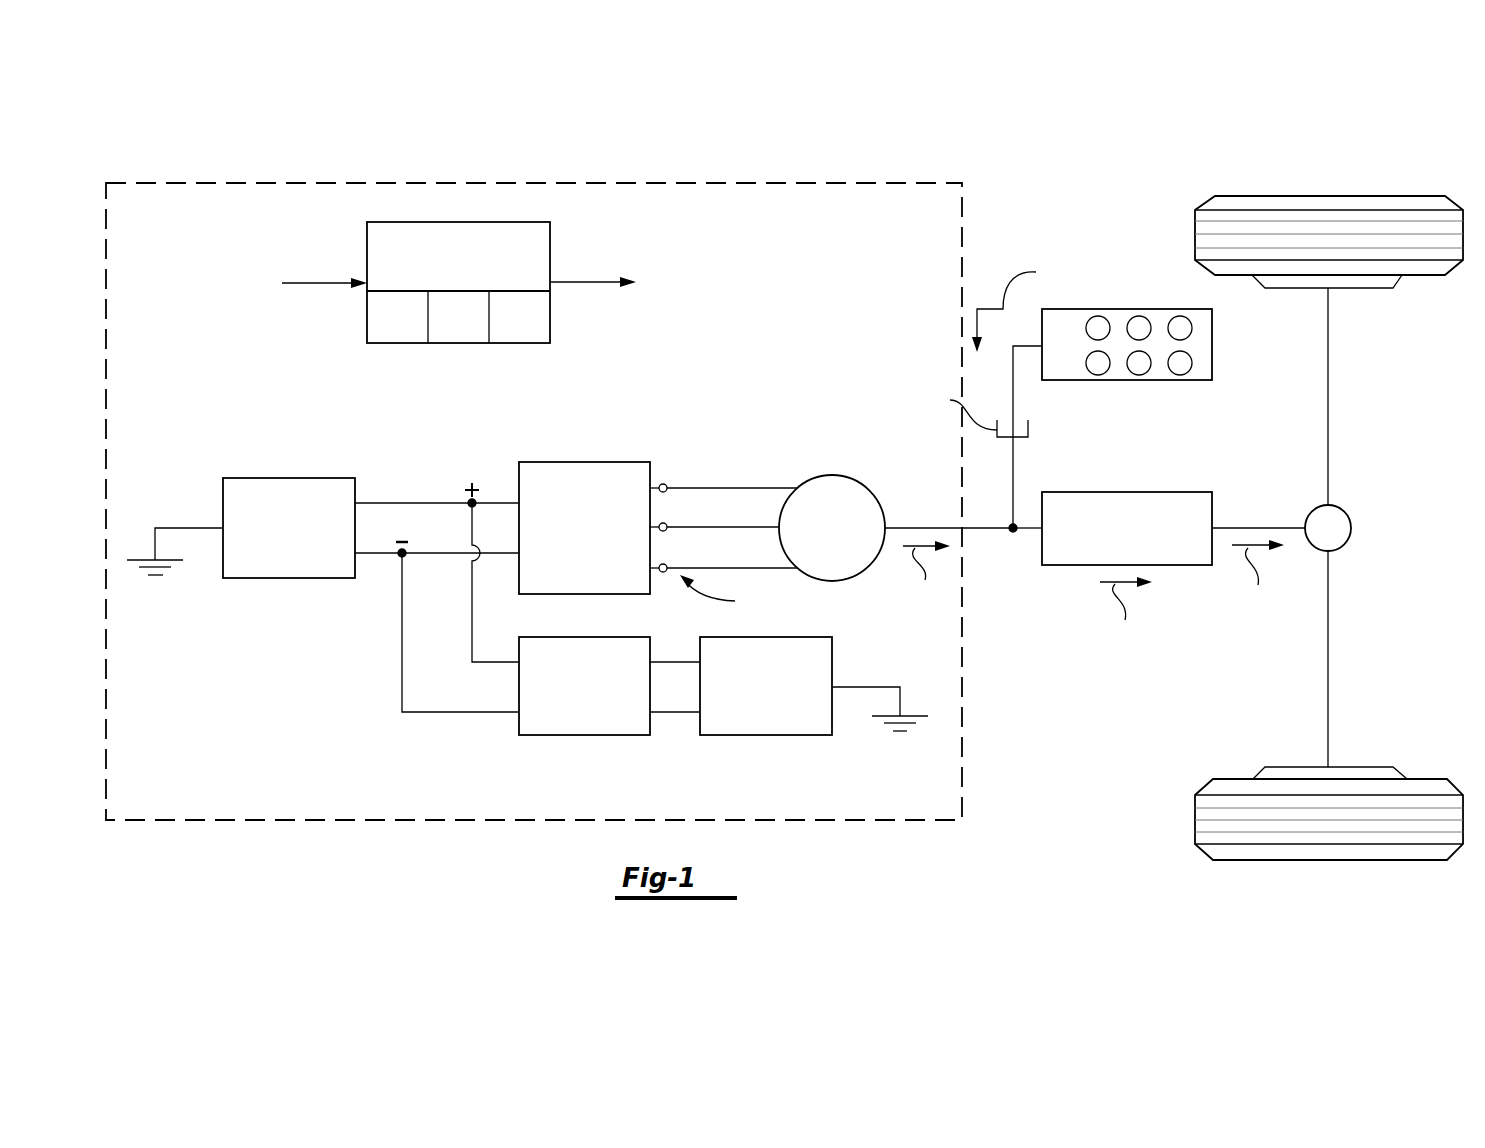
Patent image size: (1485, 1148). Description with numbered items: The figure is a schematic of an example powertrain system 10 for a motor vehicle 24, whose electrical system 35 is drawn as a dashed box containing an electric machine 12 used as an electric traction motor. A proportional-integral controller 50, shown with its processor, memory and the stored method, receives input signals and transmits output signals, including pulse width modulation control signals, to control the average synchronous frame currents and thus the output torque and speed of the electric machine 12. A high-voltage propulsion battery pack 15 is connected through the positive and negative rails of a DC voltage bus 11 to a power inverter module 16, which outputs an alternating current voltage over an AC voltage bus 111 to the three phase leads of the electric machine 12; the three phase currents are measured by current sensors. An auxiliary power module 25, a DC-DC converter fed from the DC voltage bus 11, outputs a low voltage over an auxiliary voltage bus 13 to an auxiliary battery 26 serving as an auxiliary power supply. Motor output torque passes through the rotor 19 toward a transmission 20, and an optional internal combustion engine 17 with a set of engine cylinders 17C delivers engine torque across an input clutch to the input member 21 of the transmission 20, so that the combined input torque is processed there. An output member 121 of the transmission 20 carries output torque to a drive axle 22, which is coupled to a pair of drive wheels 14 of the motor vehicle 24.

The powertrain system 10 is at (772, 256).
The electrical system 35 is at (537, 183).
The controller 50 is at (367, 244).
The propulsion battery pack 15 is at (288, 478).
The high-voltage DC voltage bus 11 is at (406, 503).
The power inverter module 16 is at (585, 462).
The high-voltage AC voltage bus 111 is at (668, 484).
The electric machine 12 is at (832, 475).
The auxiliary voltage bus 13 is at (668, 660).
The auxiliary power module 25 is at (585, 735).
The auxiliary battery 26 is at (766, 735).
The rotor 19 is at (912, 528).
The input member 21 is at (1030, 527).
The transmission 20 is at (1127, 492).
The internal combustion engine 17 is at (1127, 309).
The engine cylinders 17C is at (1139, 363).
The output member 121 is at (1253, 527).
The drive axles 22 is at (1328, 395).
The drive wheels 14 is at (1328, 196).
The motor vehicle 24 is at (1376, 147).